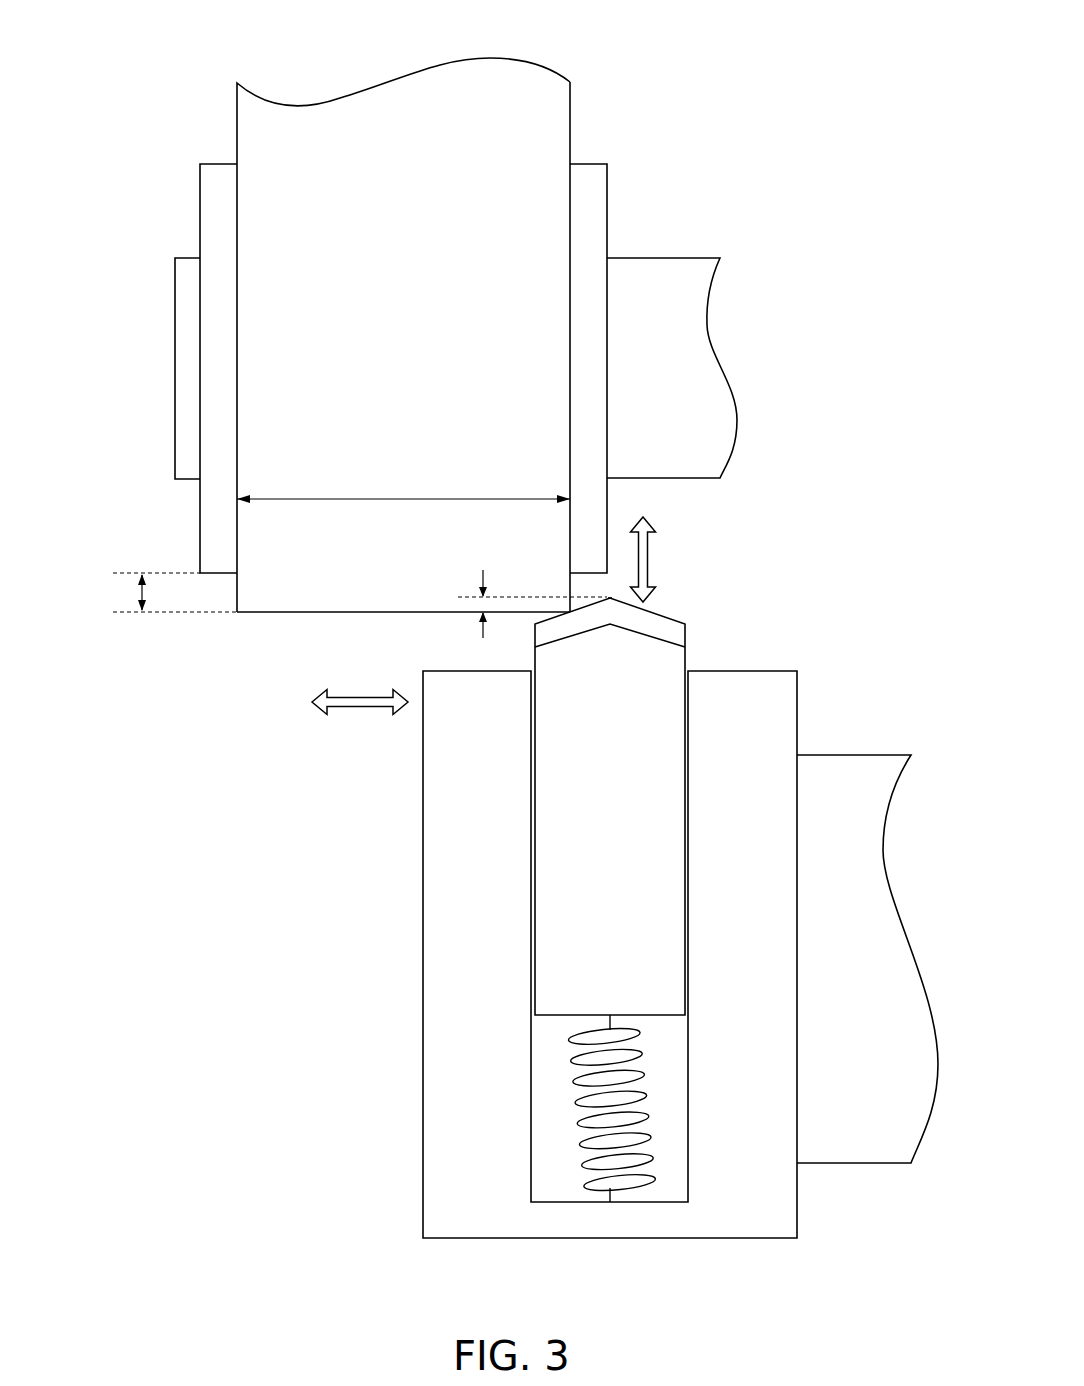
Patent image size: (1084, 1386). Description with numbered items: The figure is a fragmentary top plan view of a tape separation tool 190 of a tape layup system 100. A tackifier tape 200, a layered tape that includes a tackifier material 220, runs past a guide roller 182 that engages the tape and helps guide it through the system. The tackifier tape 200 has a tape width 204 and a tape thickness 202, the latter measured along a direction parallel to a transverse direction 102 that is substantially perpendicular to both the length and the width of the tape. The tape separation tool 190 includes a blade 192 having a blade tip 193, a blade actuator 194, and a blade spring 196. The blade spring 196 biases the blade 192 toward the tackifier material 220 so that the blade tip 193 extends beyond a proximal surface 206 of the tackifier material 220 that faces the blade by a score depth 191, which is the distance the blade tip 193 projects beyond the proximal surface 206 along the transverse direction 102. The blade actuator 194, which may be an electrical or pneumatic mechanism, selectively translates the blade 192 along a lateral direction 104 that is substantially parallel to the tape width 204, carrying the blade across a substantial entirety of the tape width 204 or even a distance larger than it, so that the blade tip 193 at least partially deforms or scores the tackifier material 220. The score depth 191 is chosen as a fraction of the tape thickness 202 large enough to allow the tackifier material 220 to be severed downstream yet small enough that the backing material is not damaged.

The tape layup system 100 is at (192, 38).
The tackifier tape 200 is at (230, 128).
The tackifier material 220 is at (553, 128).
The guide roller 182 is at (200, 200).
The tape width 204 is at (407, 498).
The tape thickness 202 is at (138, 592).
The proximal surface 206 is at (262, 614).
The score depth 191 is at (480, 618).
The blade tip 193 is at (611, 596).
The transverse direction 102 is at (650, 562).
The lateral direction 104 is at (362, 707).
The tape separation tool 190 is at (817, 624).
The blade 192 is at (670, 612).
The blade actuator 194 is at (853, 1164).
The blade spring 196 is at (648, 1113).